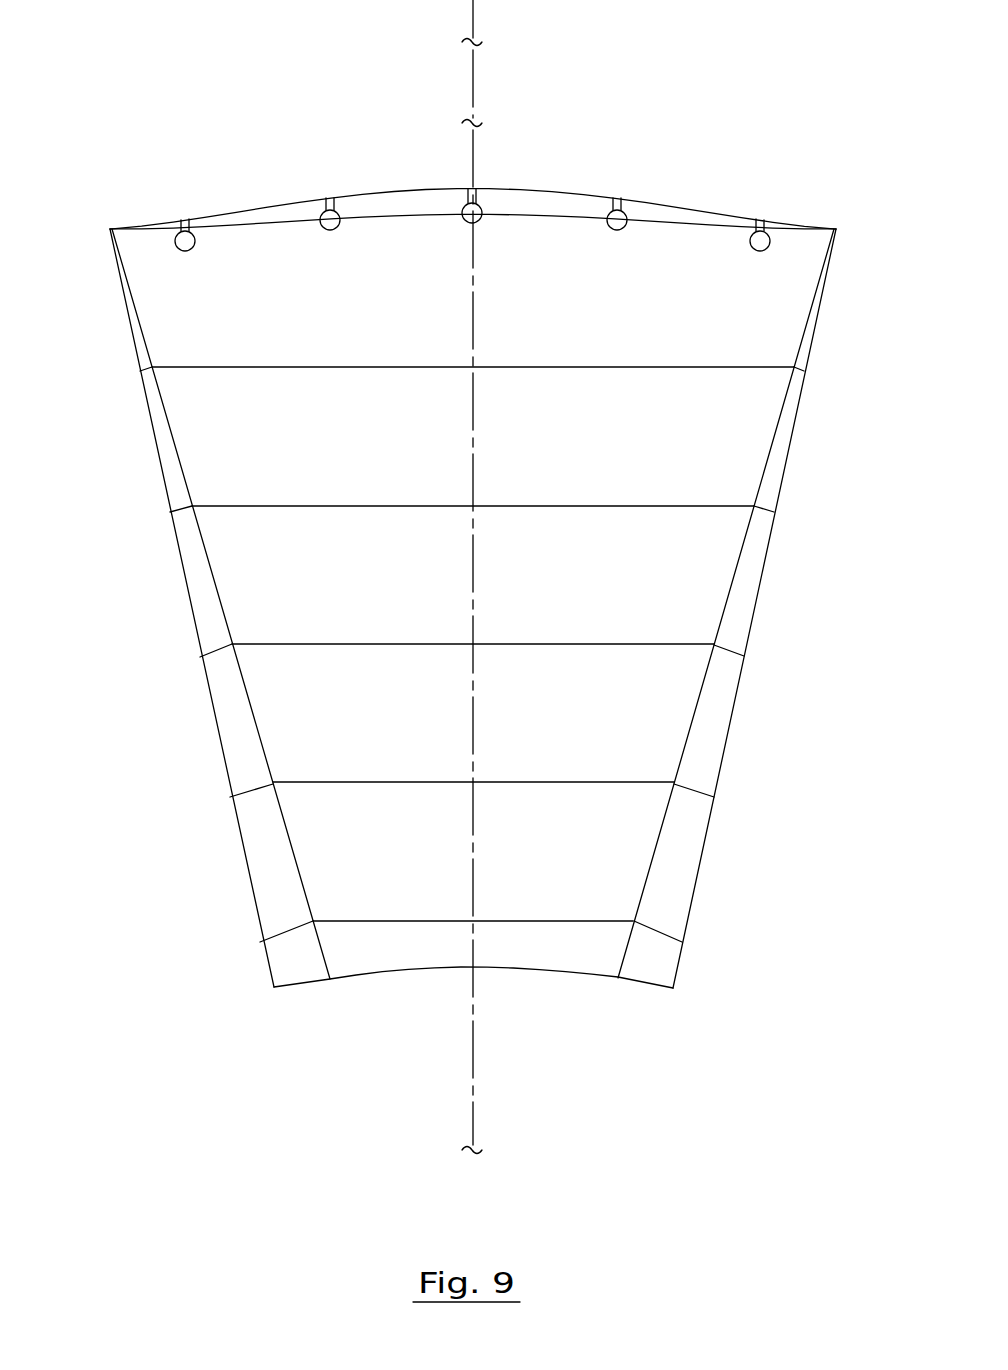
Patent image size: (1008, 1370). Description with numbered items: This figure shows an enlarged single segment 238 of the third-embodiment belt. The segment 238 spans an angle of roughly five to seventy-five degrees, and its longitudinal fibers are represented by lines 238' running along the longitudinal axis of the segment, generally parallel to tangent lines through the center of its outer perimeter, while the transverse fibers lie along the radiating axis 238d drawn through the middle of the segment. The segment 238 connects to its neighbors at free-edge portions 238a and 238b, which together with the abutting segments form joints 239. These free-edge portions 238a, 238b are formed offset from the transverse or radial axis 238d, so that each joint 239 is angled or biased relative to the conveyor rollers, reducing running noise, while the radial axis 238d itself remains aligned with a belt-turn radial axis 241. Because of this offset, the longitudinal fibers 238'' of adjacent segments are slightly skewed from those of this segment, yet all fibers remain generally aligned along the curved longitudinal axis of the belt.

The segment 238 is at (473, 632).
The free-edge portion 238a is at (202, 550).
The free-edge portion 238b is at (723, 760).
The radiating axis 238d is at (473, 160).
The longitudinal fibers 238' is at (473, 596).
The longitudinal fibers of adjacent segments 238'' is at (434, 654).
The joint 239 is at (177, 448).
The belt turn radial axis 241 is at (473, 77).